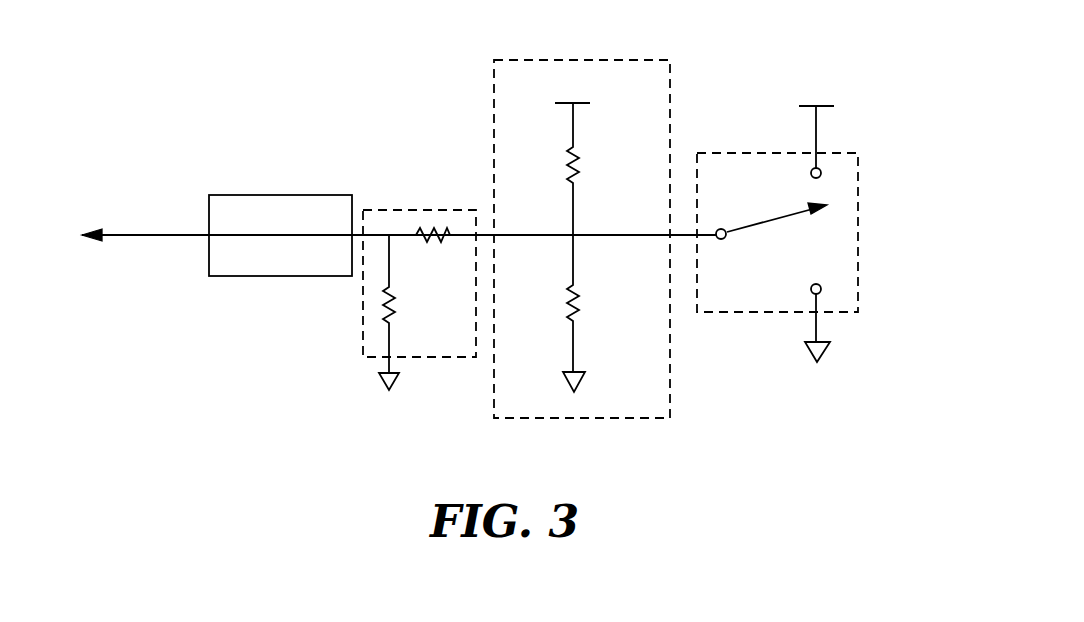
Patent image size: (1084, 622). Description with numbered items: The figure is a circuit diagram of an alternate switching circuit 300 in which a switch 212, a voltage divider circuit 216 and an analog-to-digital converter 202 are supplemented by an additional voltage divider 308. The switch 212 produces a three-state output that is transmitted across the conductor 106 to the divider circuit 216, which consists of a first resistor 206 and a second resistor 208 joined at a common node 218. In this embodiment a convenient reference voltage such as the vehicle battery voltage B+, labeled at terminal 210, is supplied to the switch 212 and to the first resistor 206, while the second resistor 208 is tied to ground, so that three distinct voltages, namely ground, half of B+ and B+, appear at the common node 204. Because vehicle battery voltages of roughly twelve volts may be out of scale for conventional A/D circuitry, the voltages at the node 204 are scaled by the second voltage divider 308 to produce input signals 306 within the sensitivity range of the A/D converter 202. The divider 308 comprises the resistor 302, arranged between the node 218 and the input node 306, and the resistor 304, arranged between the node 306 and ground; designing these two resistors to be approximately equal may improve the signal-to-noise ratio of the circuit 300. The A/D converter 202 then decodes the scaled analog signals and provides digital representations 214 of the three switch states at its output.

The switching circuit 300 is at (694, 60).
The analog-to-digital converter 202 is at (316, 194).
The digital representations 214 is at (157, 235).
The common node / signals 204 is at (484, 237).
The resistor 302 is at (432, 228).
The resistor 304 is at (395, 300).
The input to A/D converter 306 is at (389, 240).
The second voltage divider 308 is at (400, 373).
The voltage divider circuit 216 is at (592, 418).
The first resistor 206 is at (580, 160).
The second resistor 208 is at (580, 305).
The common node 218 is at (573, 235).
The conductor / ternary signal 106 is at (652, 236).
The switch 212 is at (858, 238).
The supply terminal B+ 210 is at (818, 136).